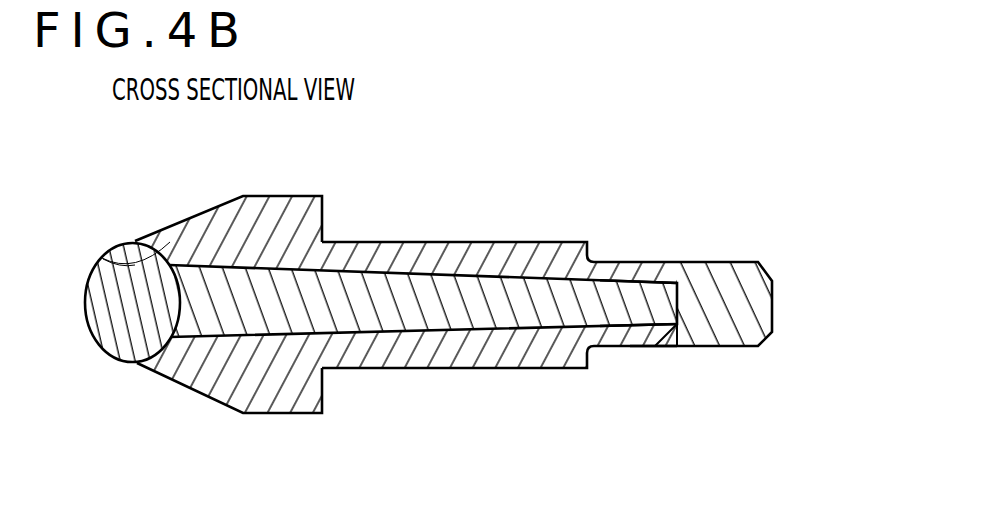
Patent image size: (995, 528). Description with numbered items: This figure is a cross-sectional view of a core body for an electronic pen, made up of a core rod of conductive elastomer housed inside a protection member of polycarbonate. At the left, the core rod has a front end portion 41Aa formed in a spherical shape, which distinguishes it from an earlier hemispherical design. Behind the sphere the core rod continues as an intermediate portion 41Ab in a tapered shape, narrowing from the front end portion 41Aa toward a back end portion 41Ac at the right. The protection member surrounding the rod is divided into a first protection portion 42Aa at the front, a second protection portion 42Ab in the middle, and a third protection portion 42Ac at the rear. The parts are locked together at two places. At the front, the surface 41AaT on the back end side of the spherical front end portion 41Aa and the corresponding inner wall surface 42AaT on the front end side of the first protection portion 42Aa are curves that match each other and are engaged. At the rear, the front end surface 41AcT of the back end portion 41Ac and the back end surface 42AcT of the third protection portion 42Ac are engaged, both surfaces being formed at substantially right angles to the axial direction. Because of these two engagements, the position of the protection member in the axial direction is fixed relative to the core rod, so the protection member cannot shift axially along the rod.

The front end portion 41Aa is at (120, 331).
The surface on back end side of front end portion 41AaT is at (103, 259).
The intermediate portion 41Ab is at (417, 320).
The back end portion 41Ac is at (733, 338).
The front end surface of back end portion 41AcT is at (687, 347).
The first protection portion 42Aa is at (265, 207).
The inner wall surface on front end side of first protection portion 42AaT is at (187, 220).
The second protection portion 42Ab is at (387, 254).
The third protection portion 42Ac is at (710, 275).
The back end surface of third protection portion 42AcT is at (653, 347).